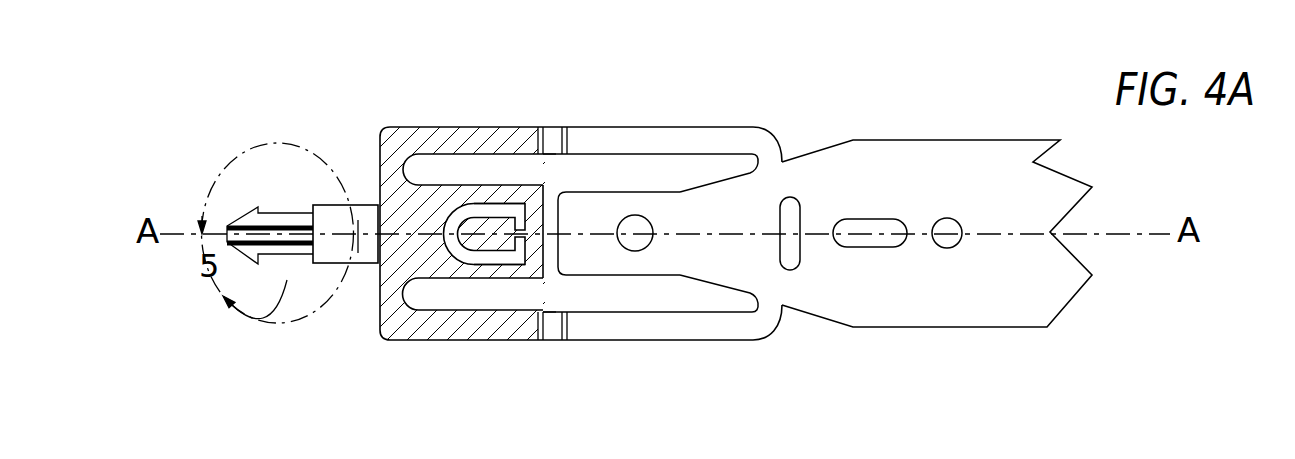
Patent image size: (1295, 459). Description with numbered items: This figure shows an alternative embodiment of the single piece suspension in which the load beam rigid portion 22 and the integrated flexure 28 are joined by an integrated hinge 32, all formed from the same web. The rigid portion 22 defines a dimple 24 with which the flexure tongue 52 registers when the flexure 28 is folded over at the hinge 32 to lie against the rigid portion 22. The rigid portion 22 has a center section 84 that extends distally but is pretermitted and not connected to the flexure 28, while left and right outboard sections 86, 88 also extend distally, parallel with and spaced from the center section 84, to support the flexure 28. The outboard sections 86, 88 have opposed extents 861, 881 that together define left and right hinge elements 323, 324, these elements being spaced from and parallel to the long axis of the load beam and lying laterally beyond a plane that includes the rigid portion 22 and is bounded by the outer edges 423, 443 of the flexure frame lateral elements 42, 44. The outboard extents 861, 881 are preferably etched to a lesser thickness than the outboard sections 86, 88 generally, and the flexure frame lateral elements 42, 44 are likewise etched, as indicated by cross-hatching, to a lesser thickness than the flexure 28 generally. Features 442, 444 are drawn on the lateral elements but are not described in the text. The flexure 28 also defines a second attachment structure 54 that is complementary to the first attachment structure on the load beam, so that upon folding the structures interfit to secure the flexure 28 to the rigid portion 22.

The rigid portion 22 is at (928, 286).
The dimple 24 is at (634, 234).
The flexure 28 is at (385, 318).
The hinge 32 is at (592, 122).
The left hinge element 323 is at (553, 130).
The right hinge element 324 is at (547, 342).
The lateral element 42 is at (512, 127).
The outer edge 423 is at (424, 132).
The outer edge 443 is at (408, 342).
The upper wall 442 is at (480, 203).
The lower wall 444 is at (479, 264).
The lateral element 44 is at (484, 342).
The flexure tongue 52 is at (488, 237).
The second attachment structure 54 is at (264, 320).
The center section 84 is at (738, 281).
The left outboard section 86 is at (670, 138).
The outboard extent 861 is at (553, 154).
The right outboard section 88 is at (742, 330).
The outboard extent 881 is at (552, 323).